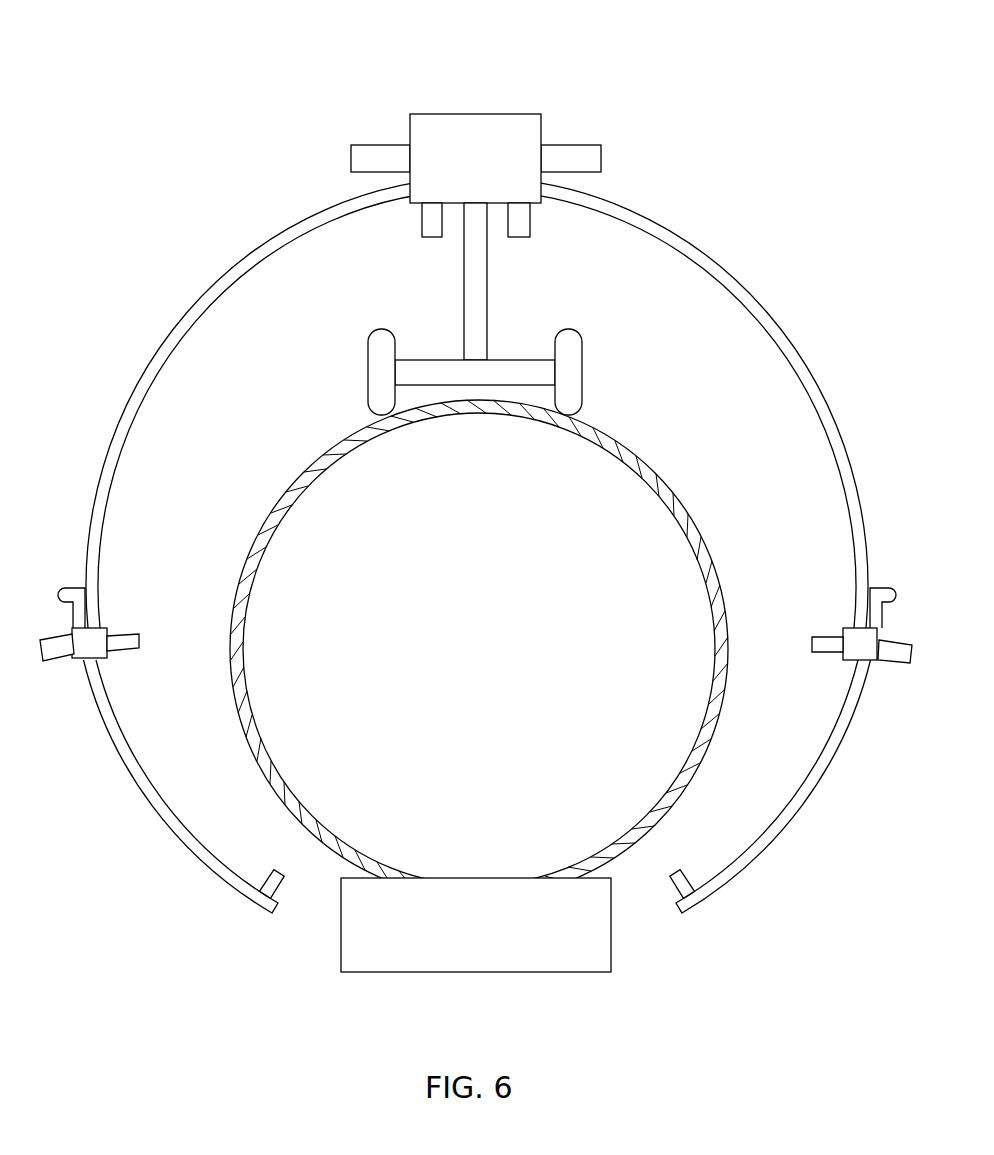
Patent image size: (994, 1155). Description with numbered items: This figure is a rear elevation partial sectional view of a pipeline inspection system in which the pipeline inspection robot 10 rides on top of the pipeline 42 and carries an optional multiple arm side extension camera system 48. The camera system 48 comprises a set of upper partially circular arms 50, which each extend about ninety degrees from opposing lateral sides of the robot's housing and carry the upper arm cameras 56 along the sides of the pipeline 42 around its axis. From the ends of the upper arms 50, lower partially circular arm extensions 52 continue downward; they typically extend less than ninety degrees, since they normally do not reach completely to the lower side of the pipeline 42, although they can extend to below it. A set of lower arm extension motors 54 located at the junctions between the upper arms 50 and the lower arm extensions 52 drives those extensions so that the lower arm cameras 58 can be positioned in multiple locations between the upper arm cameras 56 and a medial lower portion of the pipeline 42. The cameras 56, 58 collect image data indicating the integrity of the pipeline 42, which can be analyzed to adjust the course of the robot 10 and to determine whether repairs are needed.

The pipeline inspection robot 10 is at (412, 64).
The pipeline 42 is at (238, 560).
The multiple arm side extension camera system 48 is at (476, 545).
The upper partially circular arms 50 is at (190, 325).
The lower partially circular arm extensions 52 is at (168, 832).
The lower arm extension motors 54 is at (57, 662).
The upper arm cameras 56 is at (140, 641).
The lower arm cameras 58 is at (268, 872).